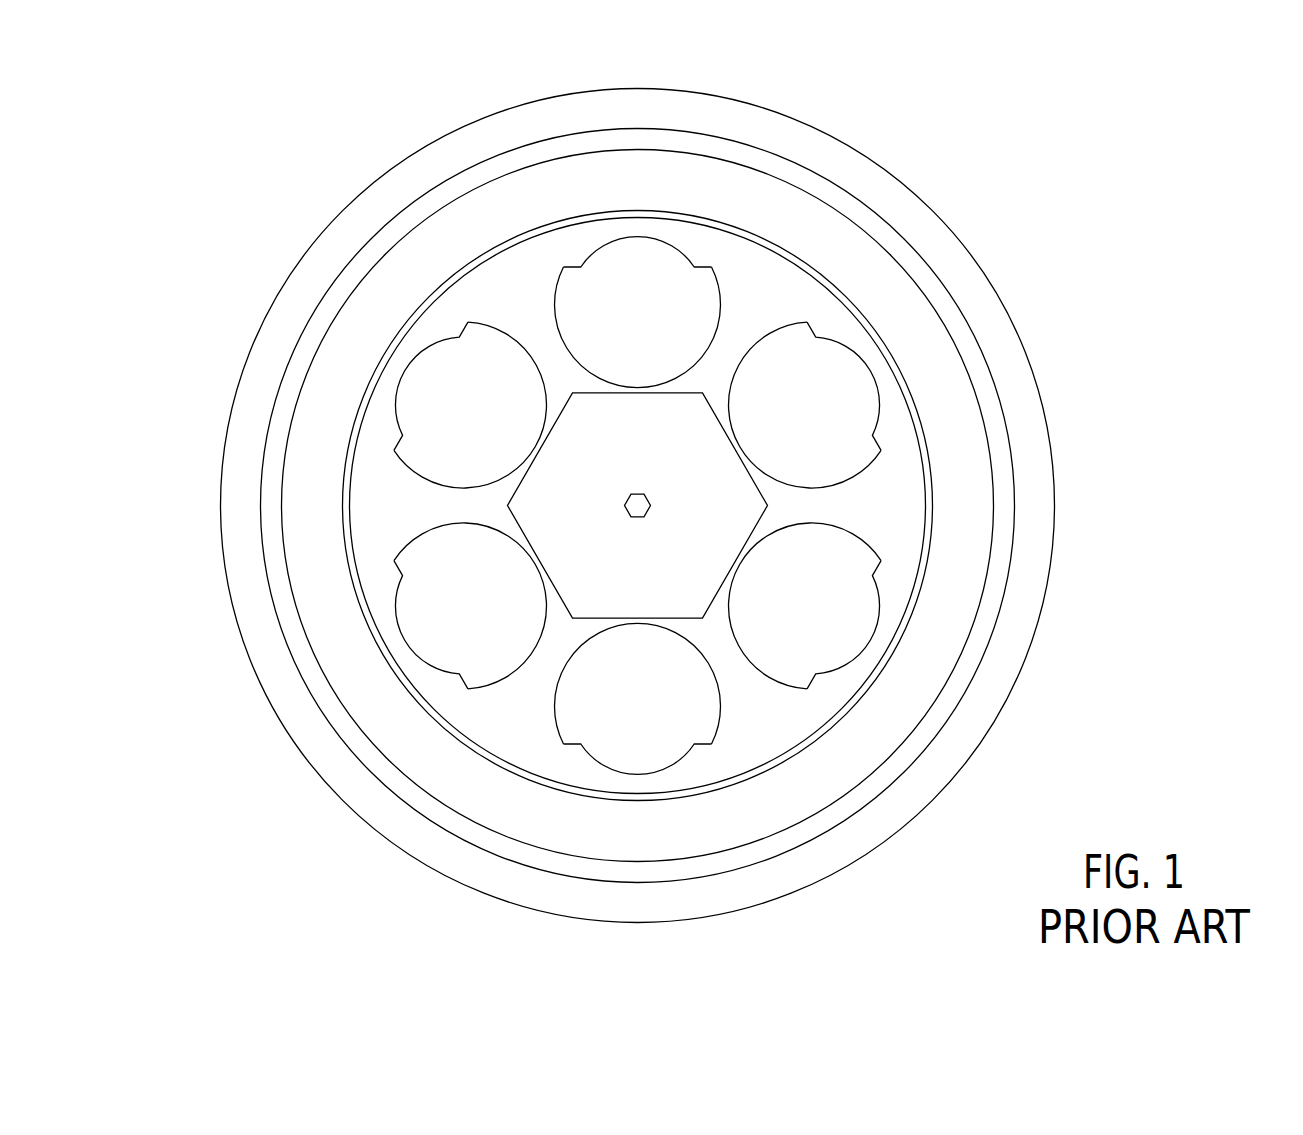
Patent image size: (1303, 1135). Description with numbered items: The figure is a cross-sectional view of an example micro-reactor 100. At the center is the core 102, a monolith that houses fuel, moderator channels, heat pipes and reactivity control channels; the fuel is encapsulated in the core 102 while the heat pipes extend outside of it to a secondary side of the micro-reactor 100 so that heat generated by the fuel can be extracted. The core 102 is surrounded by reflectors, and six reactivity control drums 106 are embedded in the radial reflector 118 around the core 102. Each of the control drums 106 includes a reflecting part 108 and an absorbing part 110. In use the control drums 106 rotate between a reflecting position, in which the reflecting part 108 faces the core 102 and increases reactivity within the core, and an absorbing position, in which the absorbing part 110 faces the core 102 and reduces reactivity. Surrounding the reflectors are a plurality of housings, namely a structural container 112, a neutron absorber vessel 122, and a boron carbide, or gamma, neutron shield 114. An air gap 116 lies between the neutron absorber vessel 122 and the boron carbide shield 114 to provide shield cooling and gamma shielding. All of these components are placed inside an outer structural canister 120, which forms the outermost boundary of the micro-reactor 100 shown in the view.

The micro-reactor 100 is at (990, 128).
The core 102 is at (618, 461).
The reactivity control drums 106 is at (727, 247).
The reflecting part 108 is at (630, 302).
The absorbing part 110 is at (620, 235).
The structural container 112 is at (580, 215).
The boron carbide shield 114 is at (353, 235).
The air gap 116 is at (418, 215).
The radial reflector 118 is at (868, 490).
The outer structural canister 120 is at (305, 258).
The neutron absorber vessel 122 is at (498, 213).